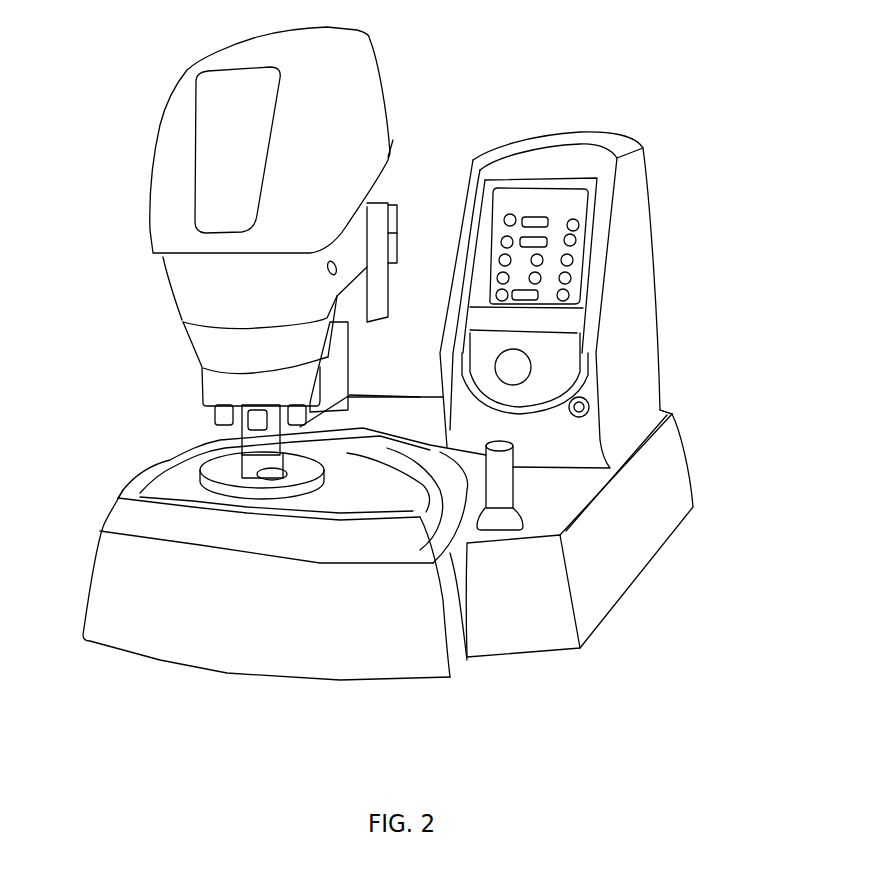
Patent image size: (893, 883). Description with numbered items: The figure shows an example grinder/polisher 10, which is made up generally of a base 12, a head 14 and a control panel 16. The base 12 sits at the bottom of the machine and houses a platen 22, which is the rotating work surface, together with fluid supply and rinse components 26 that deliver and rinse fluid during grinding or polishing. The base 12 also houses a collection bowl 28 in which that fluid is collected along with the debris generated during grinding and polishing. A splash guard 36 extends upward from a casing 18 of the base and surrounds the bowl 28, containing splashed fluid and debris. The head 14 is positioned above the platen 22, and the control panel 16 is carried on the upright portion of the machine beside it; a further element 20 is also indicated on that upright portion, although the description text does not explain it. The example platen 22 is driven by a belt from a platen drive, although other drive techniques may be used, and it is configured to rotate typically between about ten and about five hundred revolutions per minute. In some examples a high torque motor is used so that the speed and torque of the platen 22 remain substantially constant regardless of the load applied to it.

The grinder/polisher 10 is at (703, 200).
The base 12 is at (613, 565).
The head 14 is at (165, 108).
The control panel 16 is at (552, 203).
The casing 18 is at (684, 435).
The console tower 20 is at (633, 310).
The platen 22 is at (352, 497).
The fluid supply and rinse components 26 is at (497, 524).
The collection bowl 28 is at (167, 477).
The splash guard 36 is at (123, 505).